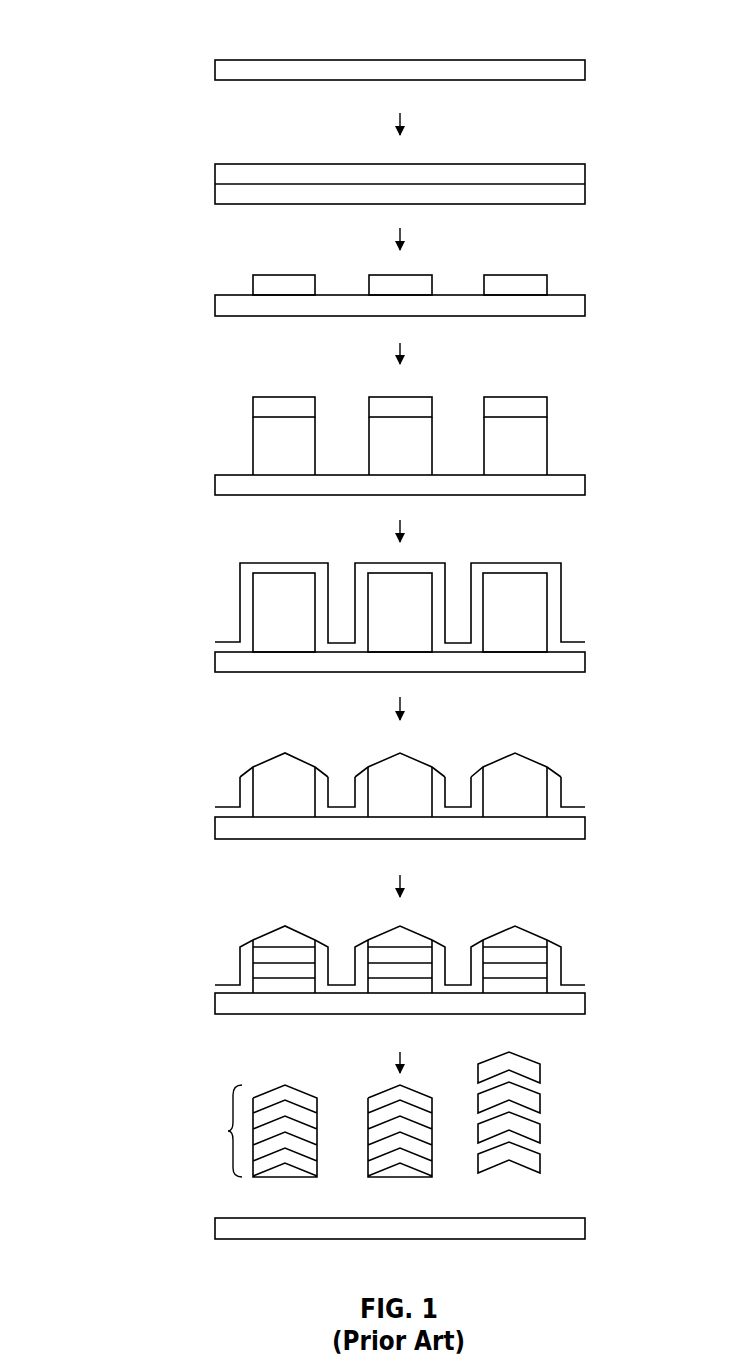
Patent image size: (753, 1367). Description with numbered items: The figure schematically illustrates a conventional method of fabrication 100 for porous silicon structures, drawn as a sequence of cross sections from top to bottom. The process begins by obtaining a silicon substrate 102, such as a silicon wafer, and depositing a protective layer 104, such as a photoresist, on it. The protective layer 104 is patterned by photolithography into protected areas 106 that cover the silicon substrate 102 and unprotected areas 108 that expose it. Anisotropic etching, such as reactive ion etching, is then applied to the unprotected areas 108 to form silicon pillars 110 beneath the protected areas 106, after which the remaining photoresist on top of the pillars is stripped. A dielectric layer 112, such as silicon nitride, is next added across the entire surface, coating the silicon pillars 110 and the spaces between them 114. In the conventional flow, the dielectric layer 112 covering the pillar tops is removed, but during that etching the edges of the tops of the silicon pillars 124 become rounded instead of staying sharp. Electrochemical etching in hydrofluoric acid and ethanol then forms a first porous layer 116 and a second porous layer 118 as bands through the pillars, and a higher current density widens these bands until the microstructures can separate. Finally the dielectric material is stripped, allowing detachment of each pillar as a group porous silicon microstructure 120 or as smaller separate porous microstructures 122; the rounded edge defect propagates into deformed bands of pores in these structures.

The conventional method of fabrication 100 is at (137, 37).
The silicon substrate 102 is at (585, 68).
The protective layer 104 is at (585, 175).
The protected areas 106 is at (253, 285).
The unprotected areas 108 is at (340, 282).
The silicon pillars 110 is at (547, 440).
The dielectric layer 112 is at (561, 583).
The spaces between the pillars 114 is at (398, 560).
The first porous layer 116 is at (530, 945).
The second porous layer 118 is at (541, 958).
The group porous silicon microstructure 120 is at (307, 1131).
The separate porous microstructures 122 is at (540, 1072).
The edges of the tops of the silicon pillars 124 is at (528, 758).